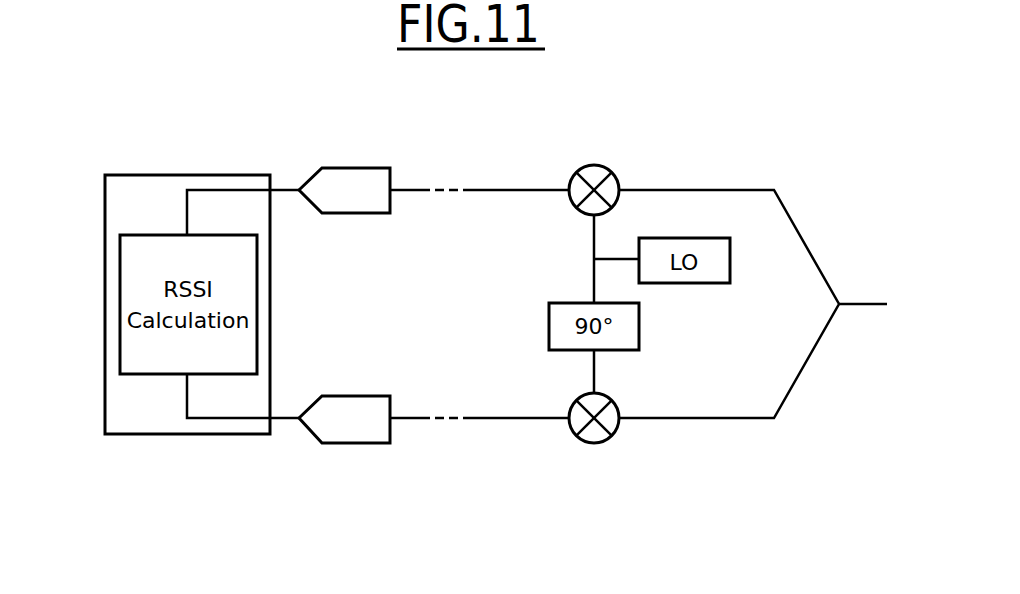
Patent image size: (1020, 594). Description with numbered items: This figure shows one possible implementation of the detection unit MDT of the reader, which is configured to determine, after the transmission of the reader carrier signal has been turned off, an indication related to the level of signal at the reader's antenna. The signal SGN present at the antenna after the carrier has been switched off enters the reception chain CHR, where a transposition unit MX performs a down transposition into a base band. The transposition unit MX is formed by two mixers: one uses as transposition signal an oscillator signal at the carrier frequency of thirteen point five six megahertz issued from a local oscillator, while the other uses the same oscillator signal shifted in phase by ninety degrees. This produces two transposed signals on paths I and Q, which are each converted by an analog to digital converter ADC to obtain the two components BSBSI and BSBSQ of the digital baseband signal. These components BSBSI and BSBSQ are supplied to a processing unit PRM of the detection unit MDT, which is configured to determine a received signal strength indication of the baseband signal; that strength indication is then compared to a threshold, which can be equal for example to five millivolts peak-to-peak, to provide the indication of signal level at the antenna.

The processing module PRM is at (120, 303).
The in-phase component of the digital baseband signal BSBSI is at (187, 213).
The quadrature component of the digital baseband signal BSBSQ is at (187, 397).
The analog to digital converter ADC is at (357, 168).
The path I is at (503, 188).
The path Q is at (503, 416).
The transposition unit MX is at (600, 165).
The reception chain CHR is at (823, 159).
The signal present at the antenna SGN is at (864, 296).
The detection unit MDT is at (377, 494).